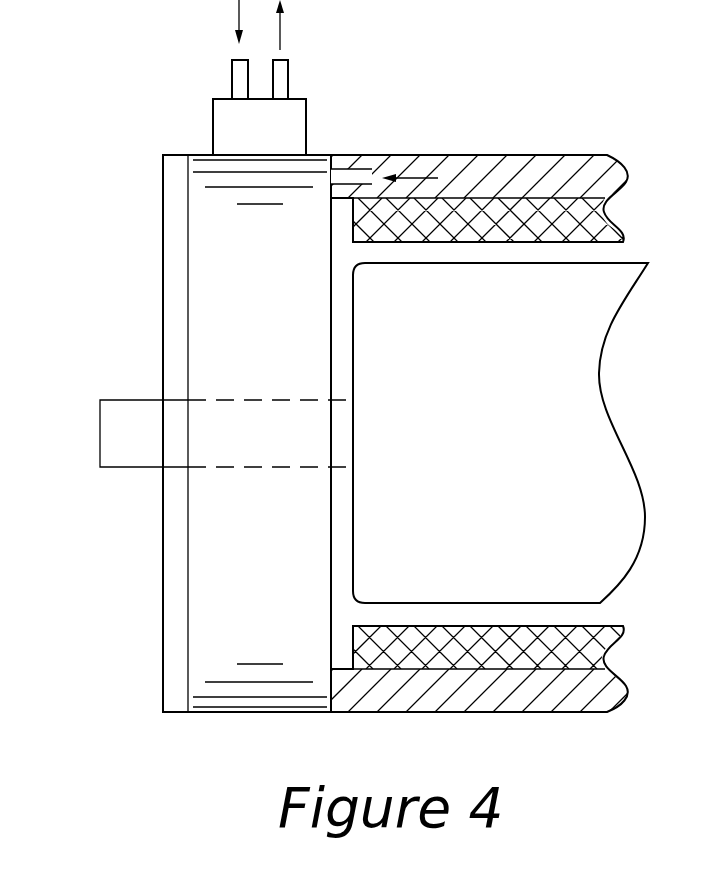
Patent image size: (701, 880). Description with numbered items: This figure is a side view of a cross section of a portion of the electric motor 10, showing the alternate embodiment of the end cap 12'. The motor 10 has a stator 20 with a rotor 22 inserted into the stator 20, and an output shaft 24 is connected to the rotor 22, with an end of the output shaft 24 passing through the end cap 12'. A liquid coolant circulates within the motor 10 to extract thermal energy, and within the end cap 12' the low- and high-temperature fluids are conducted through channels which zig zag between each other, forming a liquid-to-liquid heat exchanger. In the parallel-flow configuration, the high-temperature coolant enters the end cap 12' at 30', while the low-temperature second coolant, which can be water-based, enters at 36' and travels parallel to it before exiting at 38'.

The motor 10 is at (489, 116).
The end cap 12' is at (247, 468).
The stator 20 is at (580, 224).
The rotor 22 is at (504, 448).
The output shaft 24 is at (113, 458).
The high-temperature fluid entrance 30' is at (384, 134).
The low-temperature fluid entrance 36' is at (208, 49).
The low-temperature fluid exit 38' is at (319, 49).